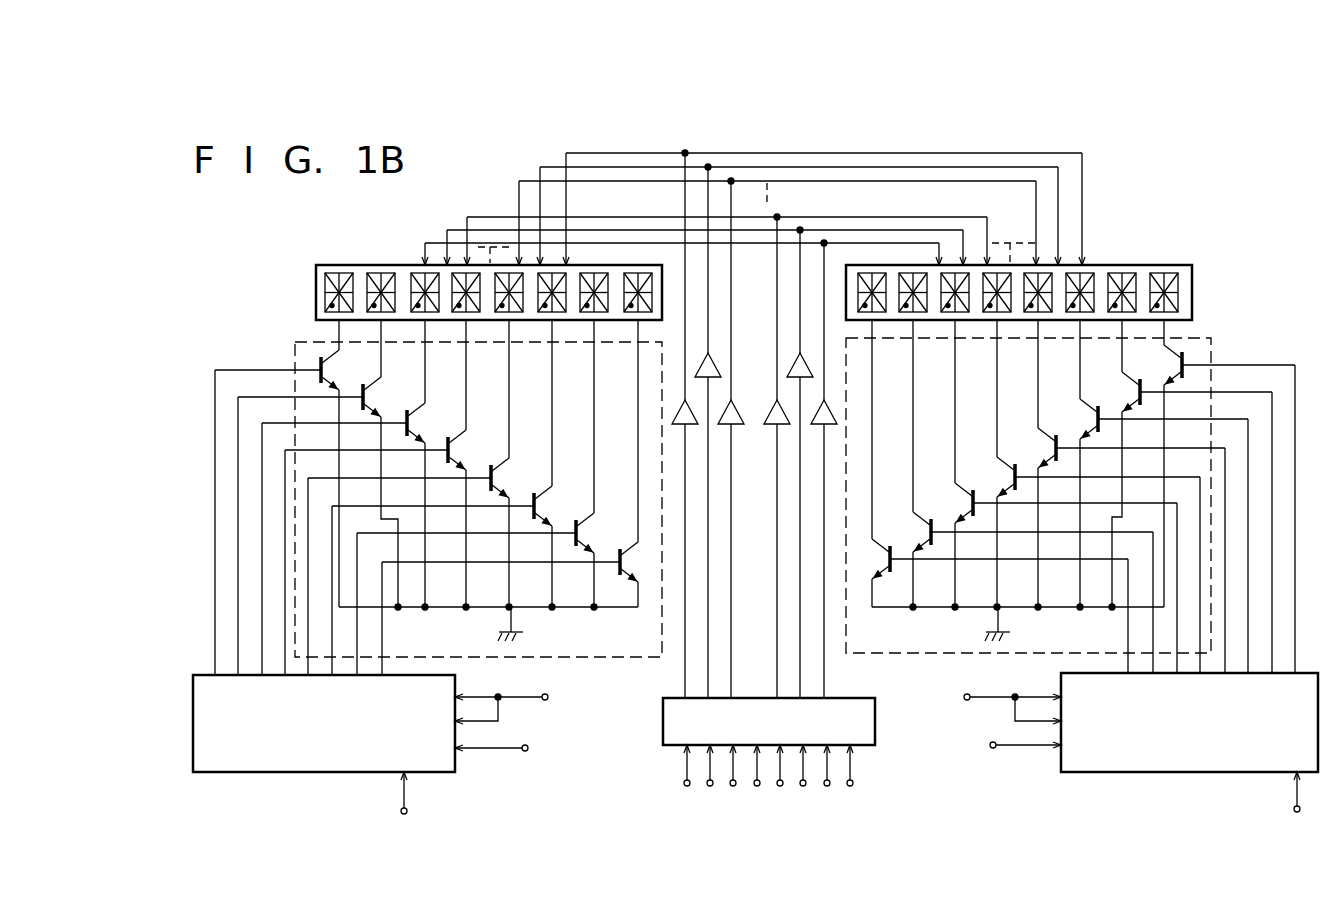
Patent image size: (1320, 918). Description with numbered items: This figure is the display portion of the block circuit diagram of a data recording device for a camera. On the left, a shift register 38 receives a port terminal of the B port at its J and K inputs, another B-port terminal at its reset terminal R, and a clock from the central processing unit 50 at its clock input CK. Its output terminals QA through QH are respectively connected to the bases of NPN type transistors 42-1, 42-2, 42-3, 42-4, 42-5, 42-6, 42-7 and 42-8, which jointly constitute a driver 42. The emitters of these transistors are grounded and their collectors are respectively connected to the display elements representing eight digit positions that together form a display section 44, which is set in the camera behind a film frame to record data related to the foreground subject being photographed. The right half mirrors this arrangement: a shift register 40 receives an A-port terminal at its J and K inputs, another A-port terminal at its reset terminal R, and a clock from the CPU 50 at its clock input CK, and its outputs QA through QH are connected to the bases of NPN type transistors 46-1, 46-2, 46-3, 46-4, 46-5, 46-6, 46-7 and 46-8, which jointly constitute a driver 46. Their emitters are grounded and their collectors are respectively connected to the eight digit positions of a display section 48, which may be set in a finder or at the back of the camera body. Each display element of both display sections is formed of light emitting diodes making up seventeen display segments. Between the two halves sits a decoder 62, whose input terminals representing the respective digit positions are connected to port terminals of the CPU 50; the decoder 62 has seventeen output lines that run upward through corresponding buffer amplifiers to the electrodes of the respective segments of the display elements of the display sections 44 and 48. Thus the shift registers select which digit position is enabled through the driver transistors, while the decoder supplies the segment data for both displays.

The shift register 38 is at (248, 773).
The shift register 40 is at (1130, 773).
The driver 42 is at (292, 355).
The NPN type transistor 42-1 is at (290, 370).
The NPN type transistor 42-2 is at (323, 397).
The NPN type transistor 42-3 is at (357, 423).
The NPN type transistor 42-4 is at (389, 450).
The NPN type transistor 42-5 is at (422, 478).
The NPN type transistor 42-6 is at (455, 506).
The NPN type transistor 42-7 is at (489, 533).
The NPN type transistor 42-8 is at (627, 574).
The display section 44 is at (372, 246).
The driver 46 is at (1212, 347).
The NPN type transistor 46-1 is at (1217, 365).
The NPN type transistor 46-2 is at (1184, 392).
The NPN type transistor 46-3 is at (1151, 419).
The NPN type transistor 46-4 is at (1119, 448).
The NPN type transistor 46-5 is at (1086, 477).
The NPN type transistor 46-6 is at (1053, 503).
The NPN type transistor 46-7 is at (1020, 532).
The NPN type transistor 46-8 is at (885, 574).
The display section 48 is at (1141, 265).
The central processing unit (CPU) 50 is at (769, 801).
The decoder 62 is at (876, 731).